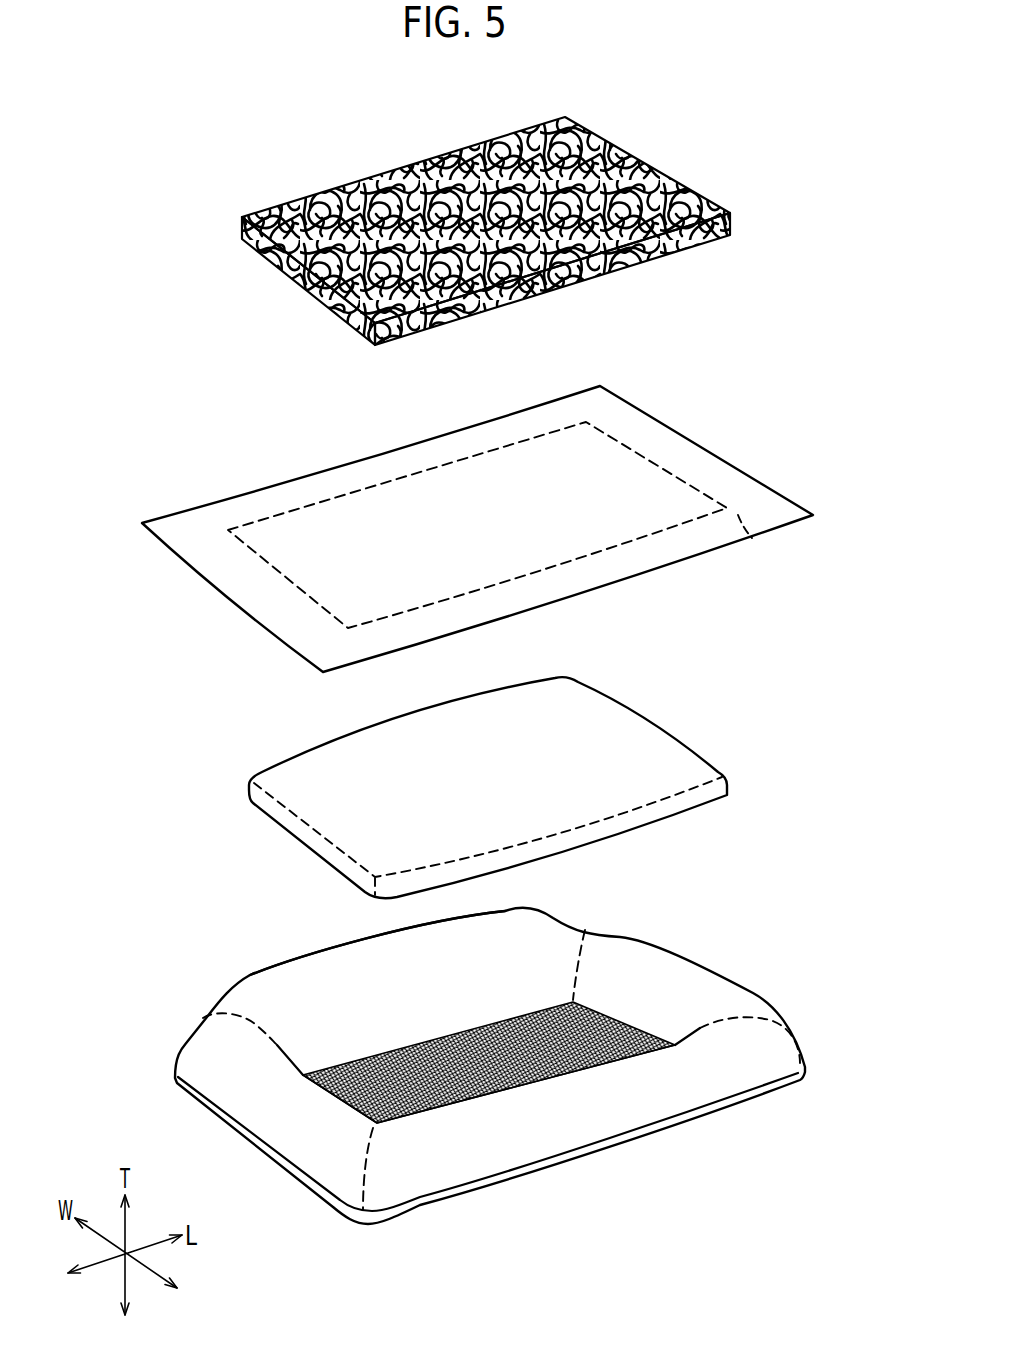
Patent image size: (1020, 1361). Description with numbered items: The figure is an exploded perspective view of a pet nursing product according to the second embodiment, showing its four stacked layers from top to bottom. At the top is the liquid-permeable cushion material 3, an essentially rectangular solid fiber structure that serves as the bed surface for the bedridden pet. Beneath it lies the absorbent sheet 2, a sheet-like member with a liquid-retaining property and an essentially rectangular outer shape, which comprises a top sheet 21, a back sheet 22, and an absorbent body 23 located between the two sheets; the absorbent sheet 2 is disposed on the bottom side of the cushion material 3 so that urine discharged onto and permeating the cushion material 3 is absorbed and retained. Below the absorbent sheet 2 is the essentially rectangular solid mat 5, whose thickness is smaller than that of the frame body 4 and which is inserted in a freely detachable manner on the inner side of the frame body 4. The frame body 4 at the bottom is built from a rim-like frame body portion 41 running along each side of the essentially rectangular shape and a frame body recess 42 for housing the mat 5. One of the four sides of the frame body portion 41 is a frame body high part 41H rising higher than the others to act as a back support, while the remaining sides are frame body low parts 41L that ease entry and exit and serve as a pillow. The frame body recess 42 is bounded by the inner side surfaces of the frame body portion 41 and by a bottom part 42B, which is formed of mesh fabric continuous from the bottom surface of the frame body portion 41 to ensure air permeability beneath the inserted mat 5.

The absorbent sheet 2 is at (515, 529).
The top sheet 21 is at (705, 472).
The back sheet 22 is at (795, 541).
The absorbent body 23 is at (703, 498).
The cushion material 3 is at (700, 153).
The frame body 4 is at (491, 1039).
The mat 5 is at (808, 880).
The frame body portion 41 is at (491, 1049).
The frame body high part 41H is at (283, 983).
The frame body low part 41L is at (207, 1050).
The frame body recess 42 is at (562, 1022).
The bottom part 42B is at (652, 1035).